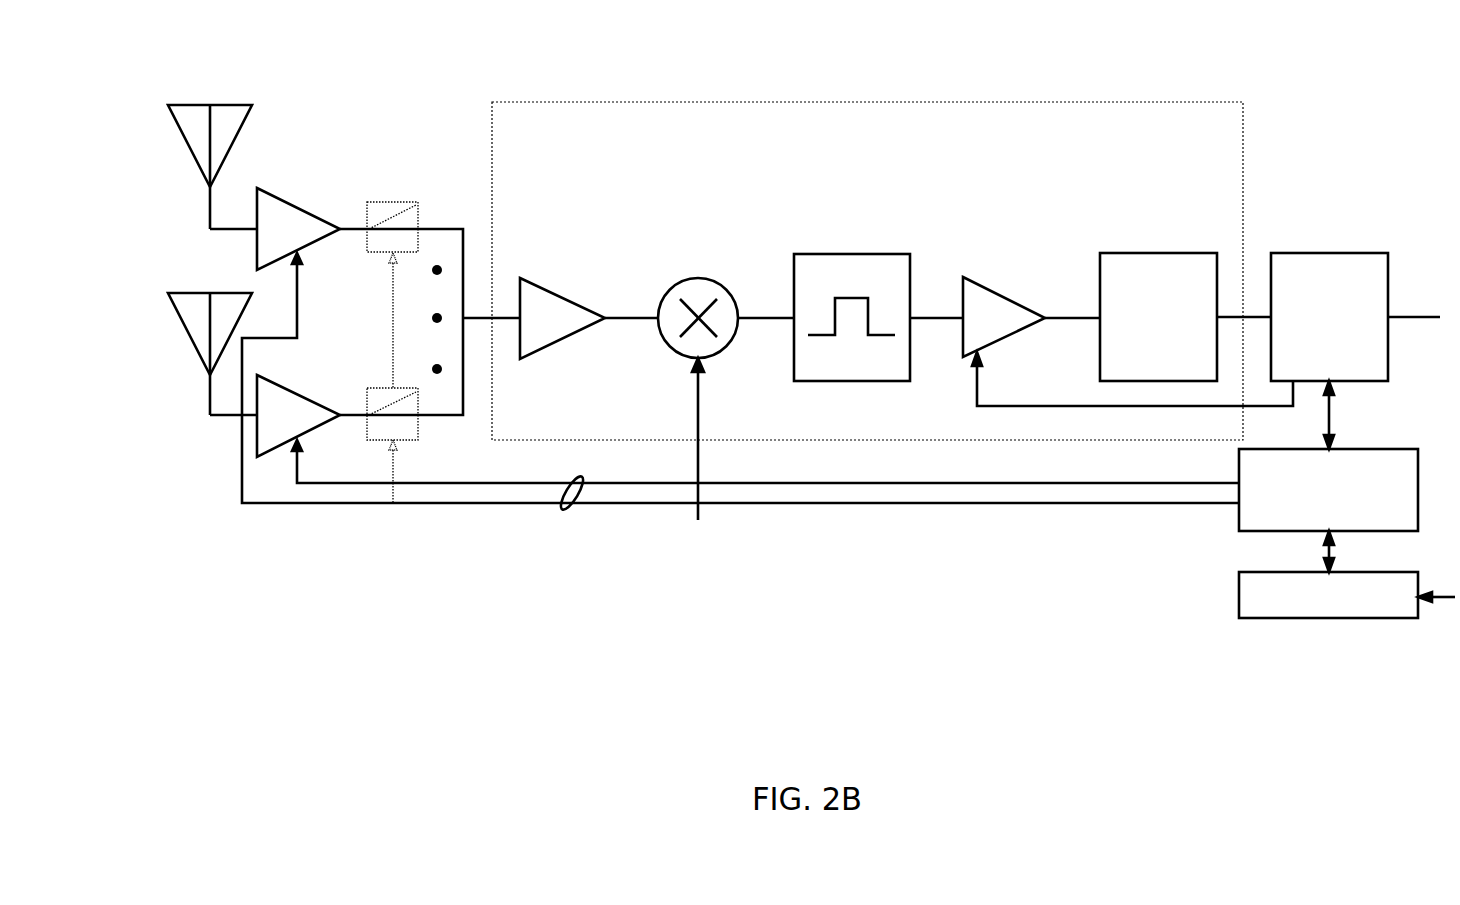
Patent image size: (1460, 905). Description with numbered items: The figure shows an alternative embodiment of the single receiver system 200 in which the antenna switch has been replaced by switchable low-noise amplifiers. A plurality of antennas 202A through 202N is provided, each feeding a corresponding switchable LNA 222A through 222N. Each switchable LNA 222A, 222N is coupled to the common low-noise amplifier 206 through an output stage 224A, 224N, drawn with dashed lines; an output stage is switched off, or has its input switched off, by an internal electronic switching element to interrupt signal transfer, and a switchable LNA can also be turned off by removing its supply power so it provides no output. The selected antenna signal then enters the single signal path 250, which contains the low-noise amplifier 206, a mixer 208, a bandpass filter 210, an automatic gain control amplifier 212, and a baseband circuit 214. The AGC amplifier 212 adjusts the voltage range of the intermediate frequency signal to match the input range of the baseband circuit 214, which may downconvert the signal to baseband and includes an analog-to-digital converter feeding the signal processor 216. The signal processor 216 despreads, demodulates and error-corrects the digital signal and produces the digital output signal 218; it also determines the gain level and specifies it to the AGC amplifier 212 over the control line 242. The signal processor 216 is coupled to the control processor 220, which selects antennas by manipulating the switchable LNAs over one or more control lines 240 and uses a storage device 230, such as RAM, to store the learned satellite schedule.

The single receiver system 200 is at (1355, 59).
The antenna 202A is at (210, 105).
The antenna 202N is at (210, 293).
The switchable LNA 222A is at (298, 207).
The switchable LNA 222N is at (317, 400).
The output stage 224A is at (393, 202).
The output stage 224N is at (418, 440).
The low-noise amplifier 206 is at (563, 293).
The mixer 208 is at (698, 278).
The bandpass filter 210 is at (852, 254).
The automatic gain control amplifier 212 is at (1005, 290).
The baseband circuit 214 is at (1157, 253).
The signal processor 216 is at (1328, 253).
The output signal 218 is at (1413, 317).
The control processor 220 is at (1395, 449).
The storage device 230 is at (1239, 580).
The control lines 240 is at (560, 505).
The control line 242 is at (1017, 406).
The signal path 250 is at (1105, 151).